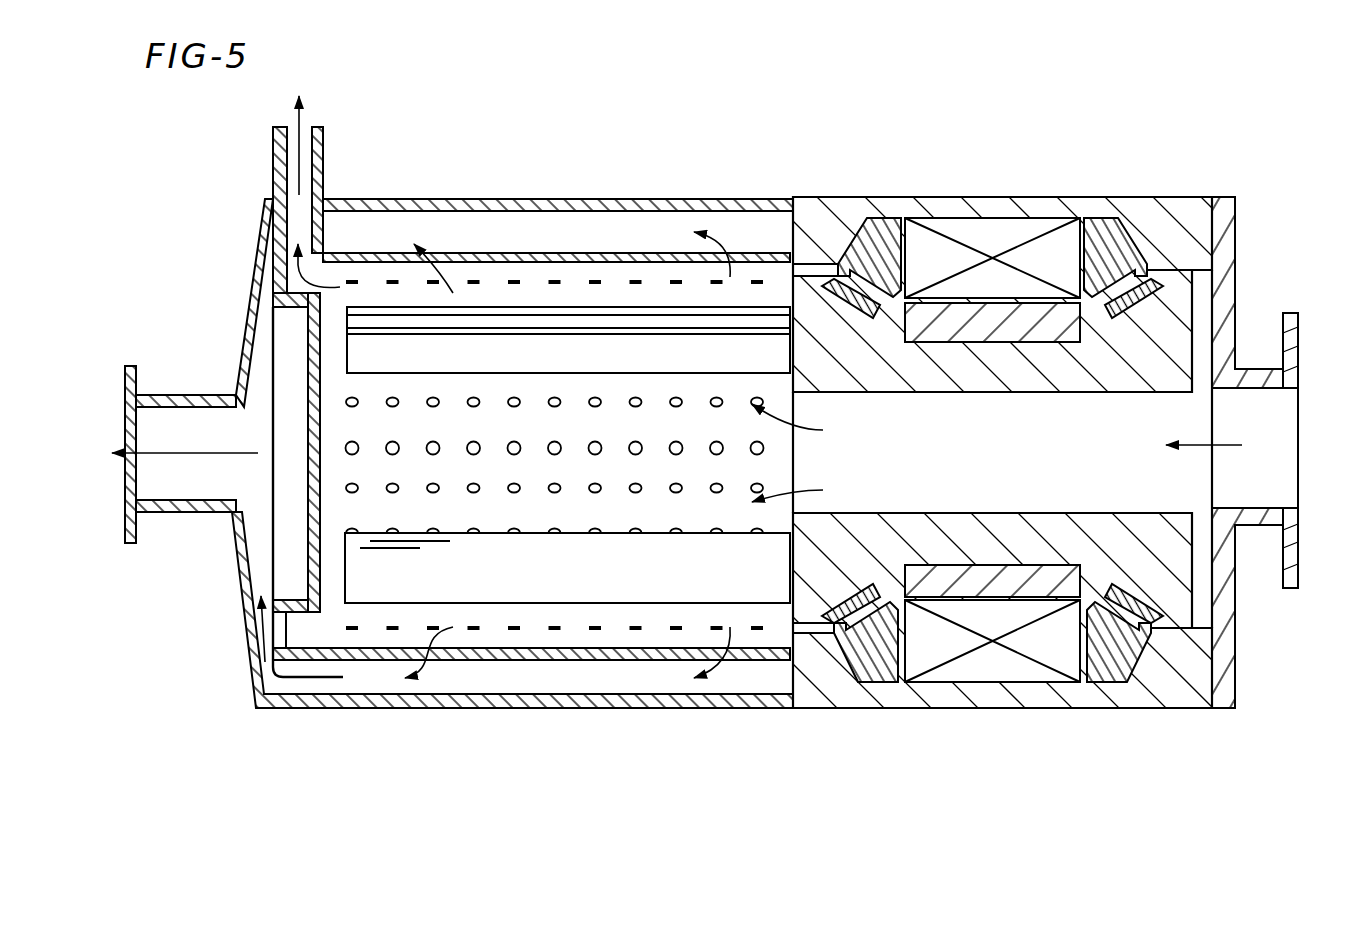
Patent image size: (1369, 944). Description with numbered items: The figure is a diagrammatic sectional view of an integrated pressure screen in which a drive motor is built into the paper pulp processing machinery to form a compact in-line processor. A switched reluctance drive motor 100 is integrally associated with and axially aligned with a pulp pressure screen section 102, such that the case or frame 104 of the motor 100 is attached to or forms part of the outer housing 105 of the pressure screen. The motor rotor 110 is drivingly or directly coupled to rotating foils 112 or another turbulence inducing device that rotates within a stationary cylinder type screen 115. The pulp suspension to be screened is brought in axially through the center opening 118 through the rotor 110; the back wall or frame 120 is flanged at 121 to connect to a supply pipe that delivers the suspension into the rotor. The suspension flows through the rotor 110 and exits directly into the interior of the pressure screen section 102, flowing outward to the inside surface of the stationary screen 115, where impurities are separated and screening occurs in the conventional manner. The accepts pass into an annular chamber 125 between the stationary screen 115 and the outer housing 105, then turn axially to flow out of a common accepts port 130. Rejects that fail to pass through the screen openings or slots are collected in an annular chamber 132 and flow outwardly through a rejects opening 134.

The switched reluctance drive motor 100 is at (955, 197).
The pulp pressure screen section 102 is at (666, 196).
The case or frame of the motor 104 is at (822, 217).
The outer housing 105 is at (756, 708).
The motor rotor 110 is at (972, 377).
The rotating foils 112 is at (510, 366).
The stationary cylinder type screen 115 is at (455, 250).
The center opening 118 is at (1075, 392).
The back wall or frame 120 is at (1233, 235).
The flange 121 is at (1287, 372).
The annular chamber 125 is at (571, 230).
The common accepts port 130 is at (182, 390).
The annular chamber 132 is at (303, 626).
The rejects opening 134 is at (326, 163).